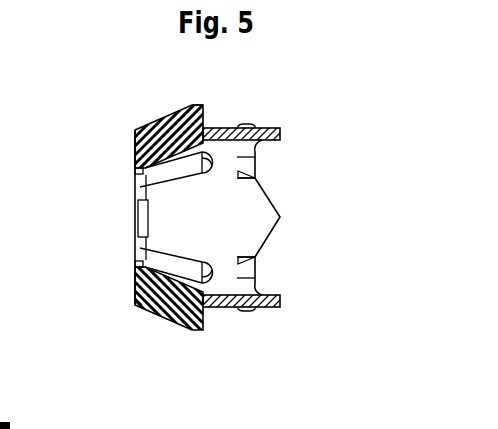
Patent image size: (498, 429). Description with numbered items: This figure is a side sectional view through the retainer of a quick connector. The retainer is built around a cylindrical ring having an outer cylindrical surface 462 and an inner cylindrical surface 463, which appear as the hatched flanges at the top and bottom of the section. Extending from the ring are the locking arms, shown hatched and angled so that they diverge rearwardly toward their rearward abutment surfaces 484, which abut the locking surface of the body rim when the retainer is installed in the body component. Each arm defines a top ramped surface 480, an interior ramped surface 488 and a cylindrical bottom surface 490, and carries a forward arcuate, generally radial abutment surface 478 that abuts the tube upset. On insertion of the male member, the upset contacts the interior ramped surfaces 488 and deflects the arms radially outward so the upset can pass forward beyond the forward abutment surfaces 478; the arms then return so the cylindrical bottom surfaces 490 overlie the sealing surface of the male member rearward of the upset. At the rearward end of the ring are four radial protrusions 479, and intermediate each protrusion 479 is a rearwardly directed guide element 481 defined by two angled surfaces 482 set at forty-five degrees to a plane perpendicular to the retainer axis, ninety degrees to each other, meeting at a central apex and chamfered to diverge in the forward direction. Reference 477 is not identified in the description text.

The outer cylindrical surface 462 is at (230, 308).
The inner cylindrical surface 463 is at (240, 284).
The chamfer 477 is at (133, 133).
The forward abutment surfaces 478 is at (135, 156).
The radial protrusions 479 is at (250, 124).
The top ramped surface 480 is at (163, 123).
The guide element 481 is at (263, 220).
The angled surfaces 482 is at (273, 200).
The rearward abutment surfaces 484 is at (205, 111).
The interior ramped surface 488 is at (140, 187).
The cylindrical bottom surface 490 is at (140, 216).